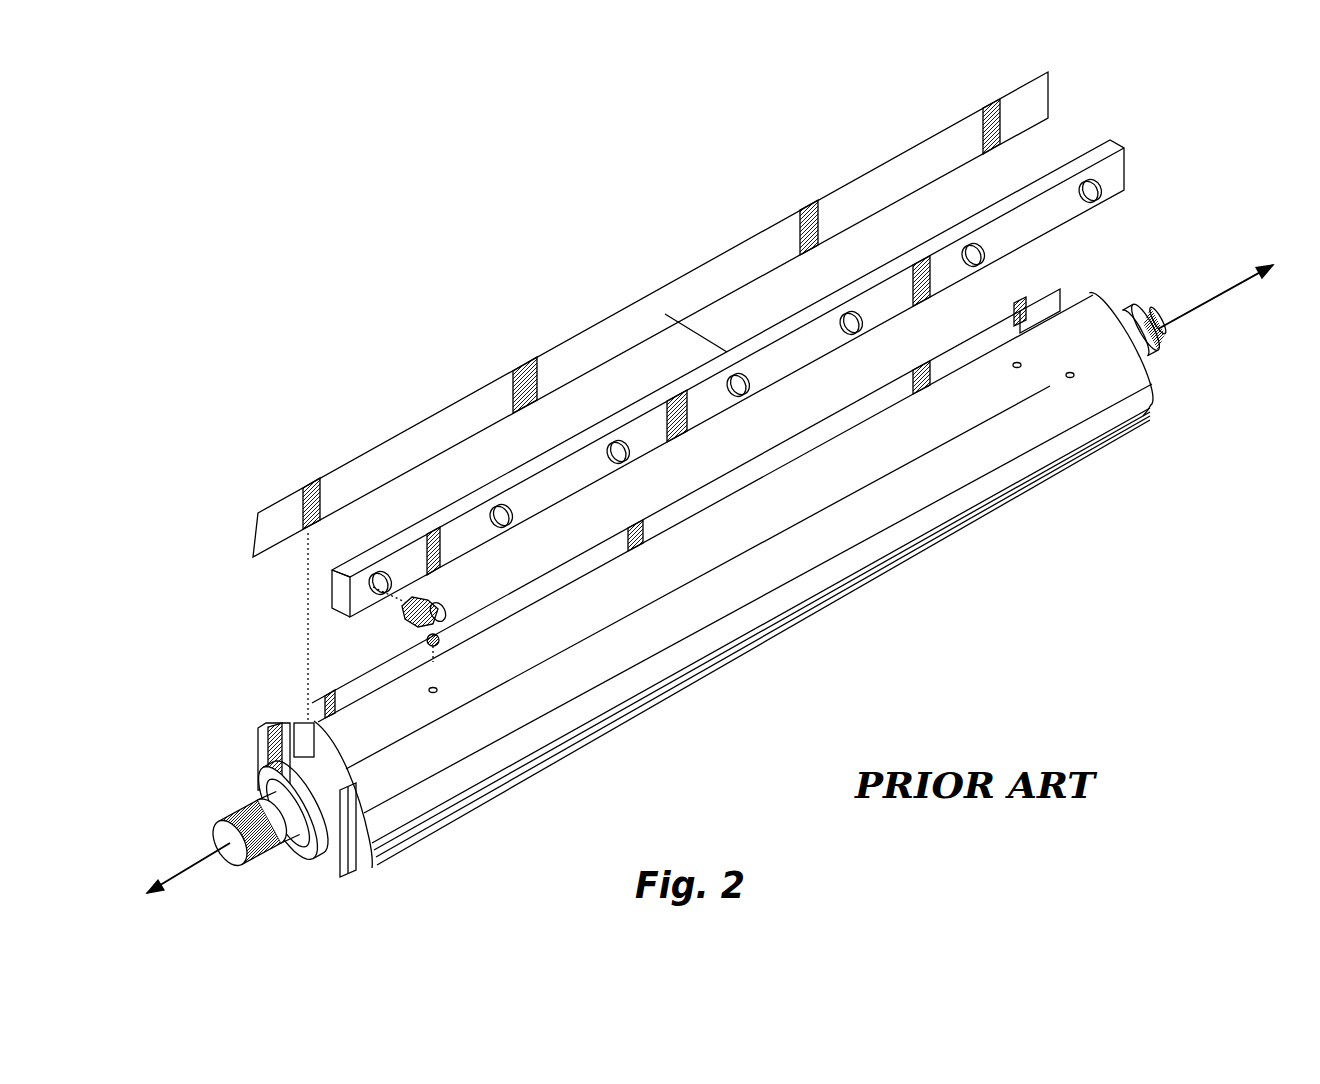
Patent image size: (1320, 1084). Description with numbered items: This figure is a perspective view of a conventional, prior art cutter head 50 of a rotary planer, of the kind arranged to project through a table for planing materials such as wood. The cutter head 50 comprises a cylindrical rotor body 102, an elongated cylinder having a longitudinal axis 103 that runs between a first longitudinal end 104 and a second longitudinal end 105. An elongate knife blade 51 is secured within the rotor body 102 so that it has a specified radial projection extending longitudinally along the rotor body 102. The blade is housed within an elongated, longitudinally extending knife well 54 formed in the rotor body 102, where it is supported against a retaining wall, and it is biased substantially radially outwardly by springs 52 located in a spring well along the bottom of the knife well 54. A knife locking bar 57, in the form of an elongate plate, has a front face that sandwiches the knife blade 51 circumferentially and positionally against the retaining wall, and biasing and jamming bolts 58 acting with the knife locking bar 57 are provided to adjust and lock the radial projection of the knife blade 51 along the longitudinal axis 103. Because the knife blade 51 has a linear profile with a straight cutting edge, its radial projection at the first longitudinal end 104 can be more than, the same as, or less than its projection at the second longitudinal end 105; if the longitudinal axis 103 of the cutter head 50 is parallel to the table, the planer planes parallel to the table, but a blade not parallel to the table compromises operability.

The cutter head 50 is at (761, 580).
The knife blade 51 is at (1050, 92).
The springs 52 is at (1022, 308).
The knife well 54 is at (290, 720).
The knife locking bar 57 is at (1126, 163).
The biasing and jamming bolts 58 is at (513, 515).
The cylindrical rotor body 102 is at (755, 586).
The longitudinal axis 103 is at (190, 870).
The first longitudinal end 104 is at (1160, 379).
The second longitudinal end 105 is at (264, 762).